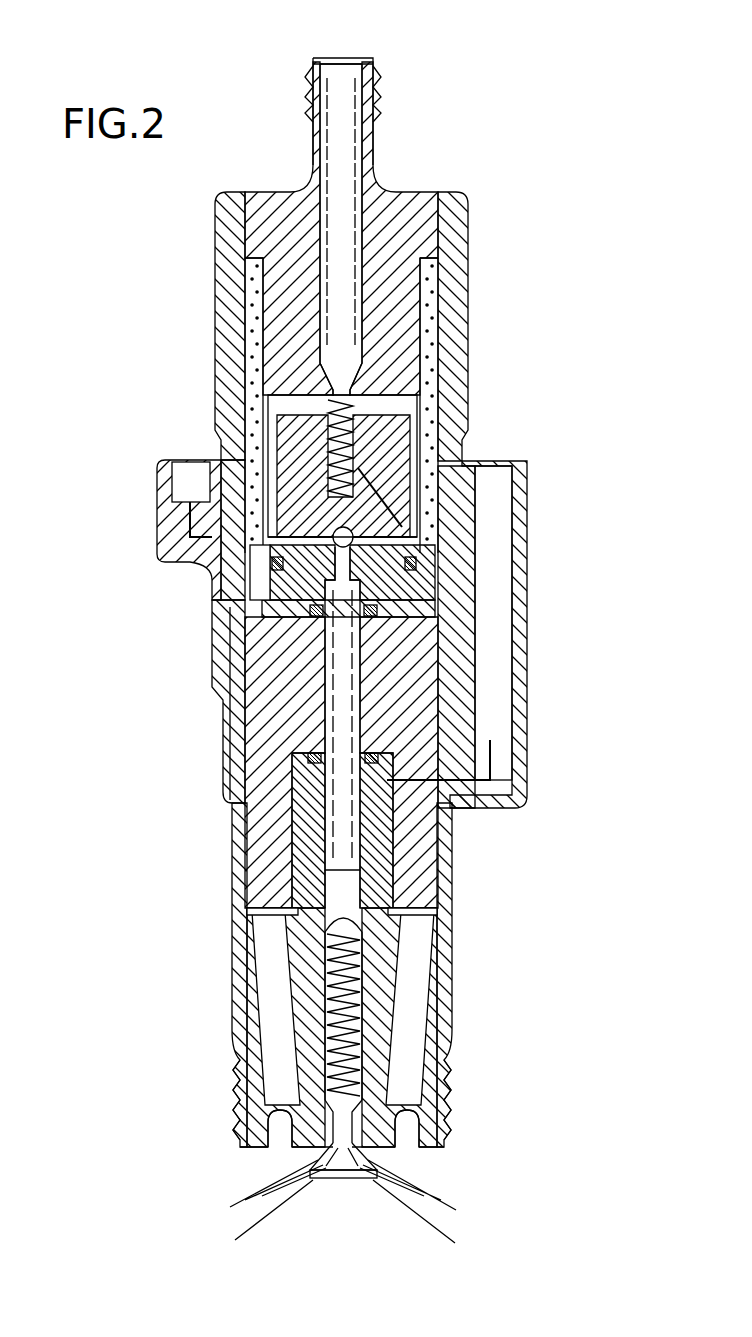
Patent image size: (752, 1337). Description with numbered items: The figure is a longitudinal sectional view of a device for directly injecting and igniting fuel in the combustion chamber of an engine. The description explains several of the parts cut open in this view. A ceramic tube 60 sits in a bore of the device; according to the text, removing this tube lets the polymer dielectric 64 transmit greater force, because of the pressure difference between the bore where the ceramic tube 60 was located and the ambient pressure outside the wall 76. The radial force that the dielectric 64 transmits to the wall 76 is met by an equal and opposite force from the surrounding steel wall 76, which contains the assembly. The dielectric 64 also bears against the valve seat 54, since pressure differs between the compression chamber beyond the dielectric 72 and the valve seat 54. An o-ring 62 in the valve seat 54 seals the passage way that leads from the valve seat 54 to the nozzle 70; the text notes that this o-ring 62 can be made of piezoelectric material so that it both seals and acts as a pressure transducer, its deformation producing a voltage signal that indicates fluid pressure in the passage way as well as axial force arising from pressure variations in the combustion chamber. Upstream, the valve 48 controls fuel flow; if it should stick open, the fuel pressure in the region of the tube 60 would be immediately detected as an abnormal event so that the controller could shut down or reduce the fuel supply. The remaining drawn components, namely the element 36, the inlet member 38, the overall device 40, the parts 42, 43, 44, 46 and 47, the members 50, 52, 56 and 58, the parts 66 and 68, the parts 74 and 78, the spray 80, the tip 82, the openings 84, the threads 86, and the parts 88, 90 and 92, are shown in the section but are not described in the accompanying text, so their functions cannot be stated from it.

The valve seat 36 is at (363, 393).
The inlet connector 38 is at (338, 58).
The fuel injector 40 is at (546, 98).
The fuel inlet tube 42 is at (362, 60).
The injector body 43 is at (407, 200).
The housing 44 is at (463, 222).
The solenoid coil 46 is at (432, 305).
The armature spring 47 is at (408, 462).
The valve 48 is at (282, 436).
The mounting flange 50 is at (205, 463).
The retaining hook 52 is at (188, 505).
The valve seat 54 is at (232, 600).
The valve plate 56 is at (440, 540).
The ball valve 58 is at (356, 533).
The ceramic tube 60 is at (345, 662).
The o-ring 62 is at (414, 566).
The polymer dielectric 64 is at (415, 718).
The outer sleeve 66 is at (500, 461).
The retaining clip 68 is at (470, 802).
The nozzle 70 is at (300, 805).
The dielectric 72 is at (425, 965).
The needle spring 74 is at (330, 1015).
The wall 76 is at (445, 1008).
The spring seat 78 is at (412, 945).
The fuel spray 80 is at (432, 1190).
The pintle tip 82 is at (330, 1180).
The discharge orifices 84 is at (413, 1150).
The threads 86 is at (450, 1067).
The needle valve 88 is at (330, 1118).
The pintle 90 is at (360, 1118).
The spring chamber 92 is at (332, 941).